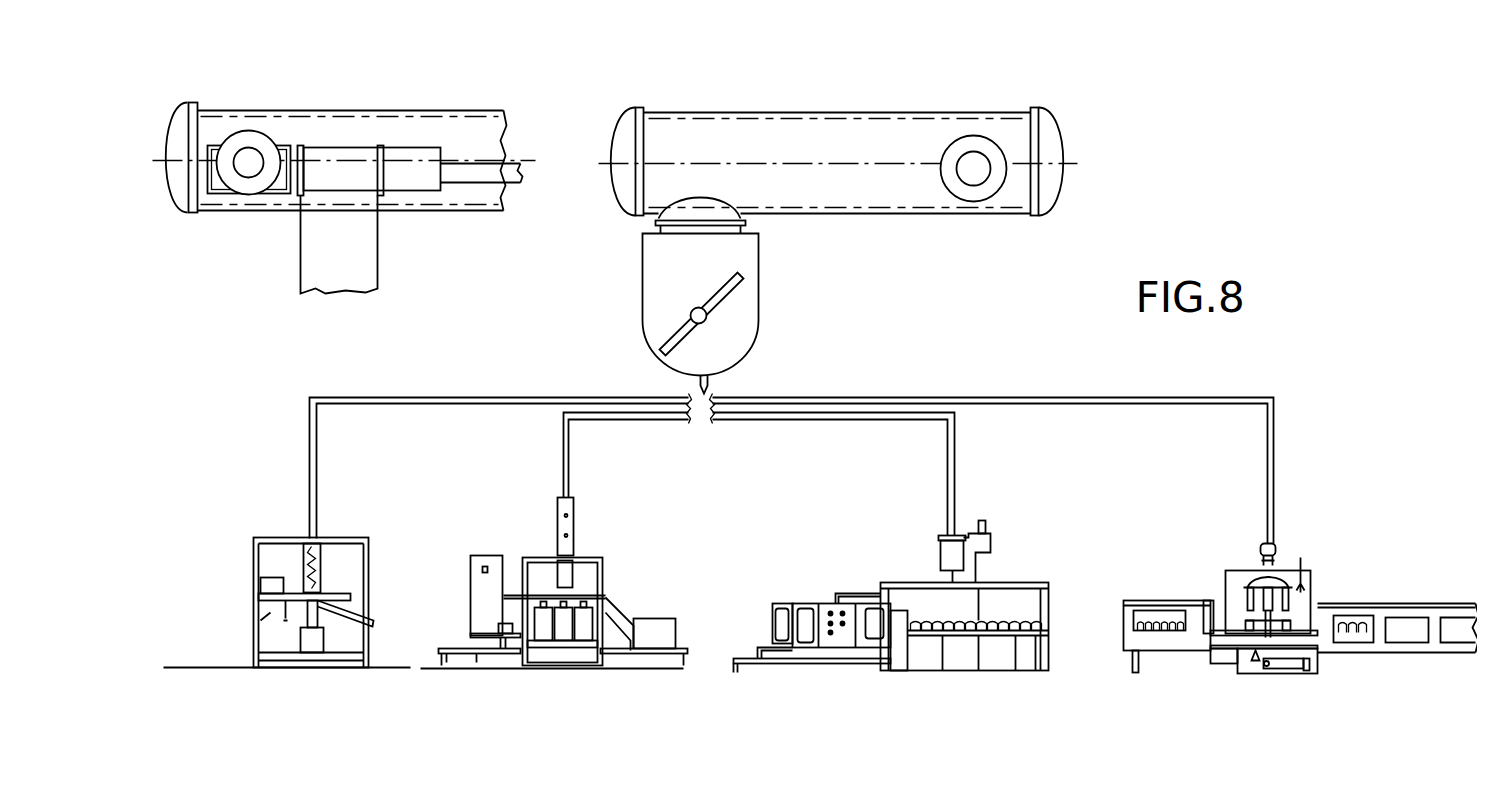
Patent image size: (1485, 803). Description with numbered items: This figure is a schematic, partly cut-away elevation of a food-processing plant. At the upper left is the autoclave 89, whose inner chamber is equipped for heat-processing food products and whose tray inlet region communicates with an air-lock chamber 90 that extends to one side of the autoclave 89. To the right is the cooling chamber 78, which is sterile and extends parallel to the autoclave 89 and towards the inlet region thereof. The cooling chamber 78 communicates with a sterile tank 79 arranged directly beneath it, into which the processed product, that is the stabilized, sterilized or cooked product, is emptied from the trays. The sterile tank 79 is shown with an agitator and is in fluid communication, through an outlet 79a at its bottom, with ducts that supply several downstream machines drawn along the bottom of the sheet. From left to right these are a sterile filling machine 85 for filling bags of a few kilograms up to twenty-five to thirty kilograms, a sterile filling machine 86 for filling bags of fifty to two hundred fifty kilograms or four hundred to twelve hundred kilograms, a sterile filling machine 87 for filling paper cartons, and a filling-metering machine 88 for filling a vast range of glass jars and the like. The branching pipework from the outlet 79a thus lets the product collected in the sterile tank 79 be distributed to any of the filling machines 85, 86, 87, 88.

The cooling chamber 78 is at (753, 110).
The sterile tank 79 is at (665, 270).
The outlet 79a is at (708, 383).
The sterile filling machine 85 is at (342, 660).
The sterile filling machine 86 is at (587, 650).
The sterile filling machine 87 is at (928, 648).
The filling-metering machine 88 is at (1290, 645).
The autoclave 89 is at (322, 108).
The air-lock chamber 90 is at (240, 137).